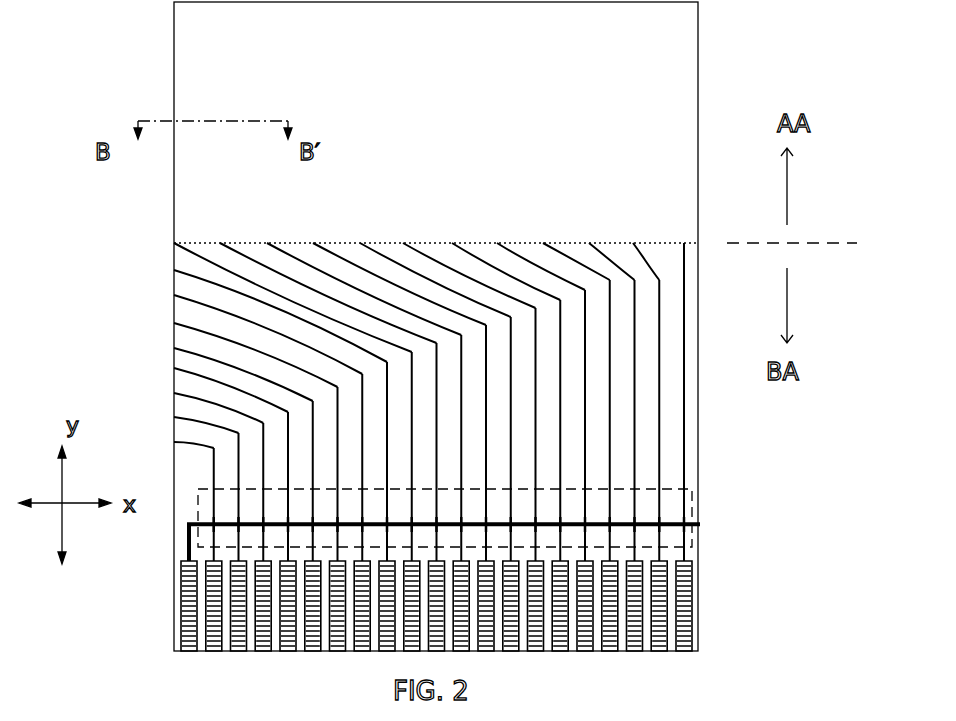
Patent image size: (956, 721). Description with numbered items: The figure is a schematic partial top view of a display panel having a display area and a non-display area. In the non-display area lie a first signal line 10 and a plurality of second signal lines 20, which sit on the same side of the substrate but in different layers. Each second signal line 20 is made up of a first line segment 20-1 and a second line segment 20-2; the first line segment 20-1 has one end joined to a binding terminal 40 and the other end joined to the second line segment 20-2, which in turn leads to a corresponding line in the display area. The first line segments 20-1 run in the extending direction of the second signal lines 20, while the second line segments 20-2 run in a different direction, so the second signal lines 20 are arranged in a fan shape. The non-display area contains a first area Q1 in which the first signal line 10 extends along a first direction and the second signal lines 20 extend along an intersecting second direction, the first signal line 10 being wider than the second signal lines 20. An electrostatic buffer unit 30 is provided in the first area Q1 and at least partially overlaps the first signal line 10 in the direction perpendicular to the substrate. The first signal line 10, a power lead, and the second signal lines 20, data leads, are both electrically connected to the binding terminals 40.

The first signal line 10 is at (205, 522).
The second signal line 20 is at (408, 402).
The first line segment 20-1 is at (385, 400).
The second line segment 20-2 is at (212, 291).
The electrostatic buffer unit 30 is at (668, 520).
The first area Q1 is at (668, 489).
The binding terminal 40 is at (685, 622).